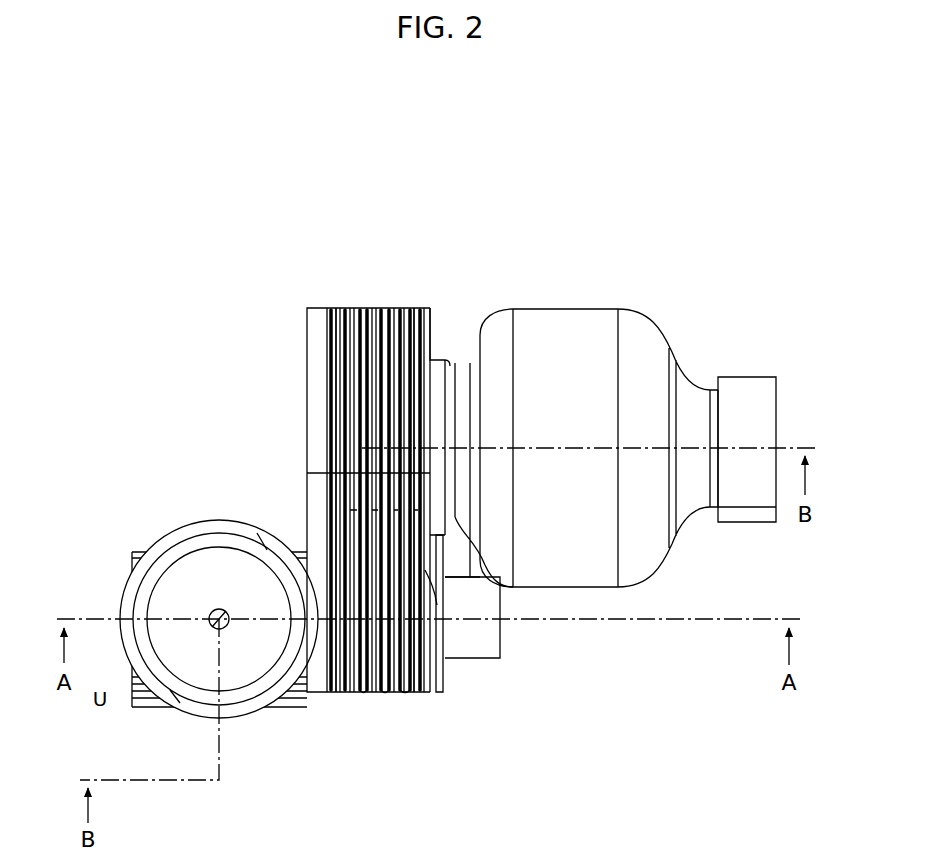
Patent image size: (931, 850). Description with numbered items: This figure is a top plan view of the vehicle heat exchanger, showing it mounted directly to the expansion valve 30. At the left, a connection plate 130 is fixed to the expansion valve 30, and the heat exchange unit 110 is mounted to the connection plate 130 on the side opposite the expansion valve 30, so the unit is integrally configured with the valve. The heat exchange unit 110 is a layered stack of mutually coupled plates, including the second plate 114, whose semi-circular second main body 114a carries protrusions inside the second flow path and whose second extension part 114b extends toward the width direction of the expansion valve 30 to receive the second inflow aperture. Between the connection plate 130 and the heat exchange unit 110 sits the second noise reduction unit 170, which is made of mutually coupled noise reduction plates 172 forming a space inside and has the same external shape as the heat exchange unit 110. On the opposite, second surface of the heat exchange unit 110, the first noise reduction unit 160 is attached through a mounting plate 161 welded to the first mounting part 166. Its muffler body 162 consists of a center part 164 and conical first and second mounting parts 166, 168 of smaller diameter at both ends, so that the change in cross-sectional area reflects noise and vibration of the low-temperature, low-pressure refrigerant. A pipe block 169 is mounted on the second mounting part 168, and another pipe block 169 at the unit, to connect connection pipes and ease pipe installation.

The expansion valve 30 is at (289, 707).
The heat exchange unit 110 is at (352, 292).
The second plate 114 is at (402, 712).
The second main body 114a is at (413, 345).
The second extension part 114b is at (415, 690).
The connection plate 130 is at (315, 352).
The first noise reduction unit 160 is at (610, 454).
The mounting plate 161 is at (428, 318).
The muffler body 162 is at (670, 326).
The center part 164 is at (566, 310).
The first mounting part 166 is at (457, 380).
The second mounting part 168 is at (710, 388).
The pipe block 169 is at (755, 377).
The second noise reduction unit 170 is at (348, 292).
The noise reduction plate 172 is at (342, 325).